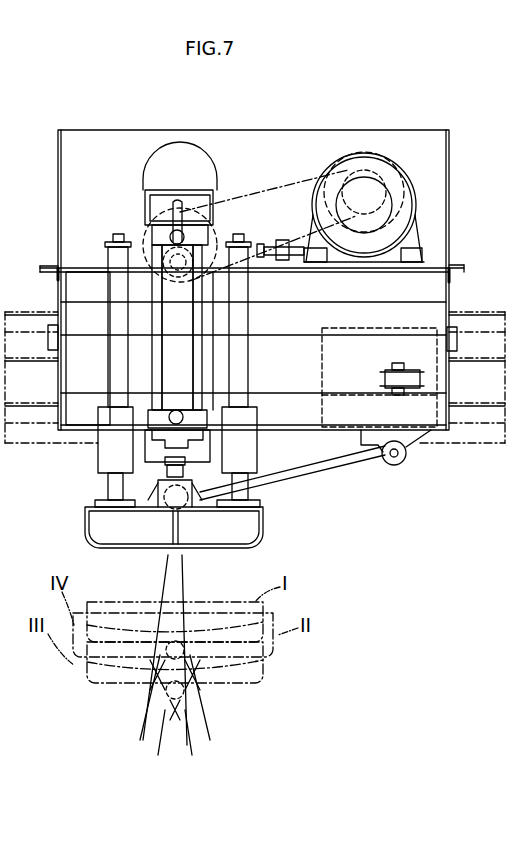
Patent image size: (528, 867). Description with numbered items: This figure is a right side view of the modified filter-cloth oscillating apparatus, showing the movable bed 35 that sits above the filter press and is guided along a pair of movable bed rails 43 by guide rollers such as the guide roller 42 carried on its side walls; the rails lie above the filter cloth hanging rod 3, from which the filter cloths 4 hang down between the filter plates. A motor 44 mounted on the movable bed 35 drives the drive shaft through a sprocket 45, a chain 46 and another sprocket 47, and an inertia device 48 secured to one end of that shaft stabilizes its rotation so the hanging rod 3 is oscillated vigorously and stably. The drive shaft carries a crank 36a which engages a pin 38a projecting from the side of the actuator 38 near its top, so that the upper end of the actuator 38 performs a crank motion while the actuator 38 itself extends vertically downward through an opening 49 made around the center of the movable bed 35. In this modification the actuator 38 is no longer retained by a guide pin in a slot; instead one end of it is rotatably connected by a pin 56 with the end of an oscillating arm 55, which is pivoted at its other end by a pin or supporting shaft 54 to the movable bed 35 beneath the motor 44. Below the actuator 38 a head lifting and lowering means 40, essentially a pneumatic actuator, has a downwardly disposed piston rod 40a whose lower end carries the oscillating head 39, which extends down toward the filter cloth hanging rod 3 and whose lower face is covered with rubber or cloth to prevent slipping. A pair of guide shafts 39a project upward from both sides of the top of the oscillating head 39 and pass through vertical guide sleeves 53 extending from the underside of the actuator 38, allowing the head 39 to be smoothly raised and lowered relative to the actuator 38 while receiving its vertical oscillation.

The movable bed 35 is at (56, 168).
The inertia device 48 is at (157, 163).
The chain 46 is at (244, 196).
The sprocket 45 is at (398, 176).
The motor 44 is at (420, 203).
The opening 49 is at (90, 277).
The sprocket 47 is at (140, 243).
The crank 36a is at (214, 232).
The movable bed rails 43 is at (40, 305).
The pin 38a is at (208, 275).
The head lifting and lowering means 40 is at (190, 323).
The guide shafts 39a is at (110, 372).
The actuator 38 is at (213, 387).
The guide sleeves 53 is at (105, 445).
The guide roller 42 is at (415, 395).
The piston rod 40a is at (167, 452).
The oscillating arm 55 is at (342, 472).
The pin (supporting shaft) 54 is at (400, 464).
The oscillating head 39 is at (262, 528).
The pin 56 is at (188, 512).
The filter cloth hanging rod 3 is at (200, 680).
The filter cloths 4 is at (200, 720).